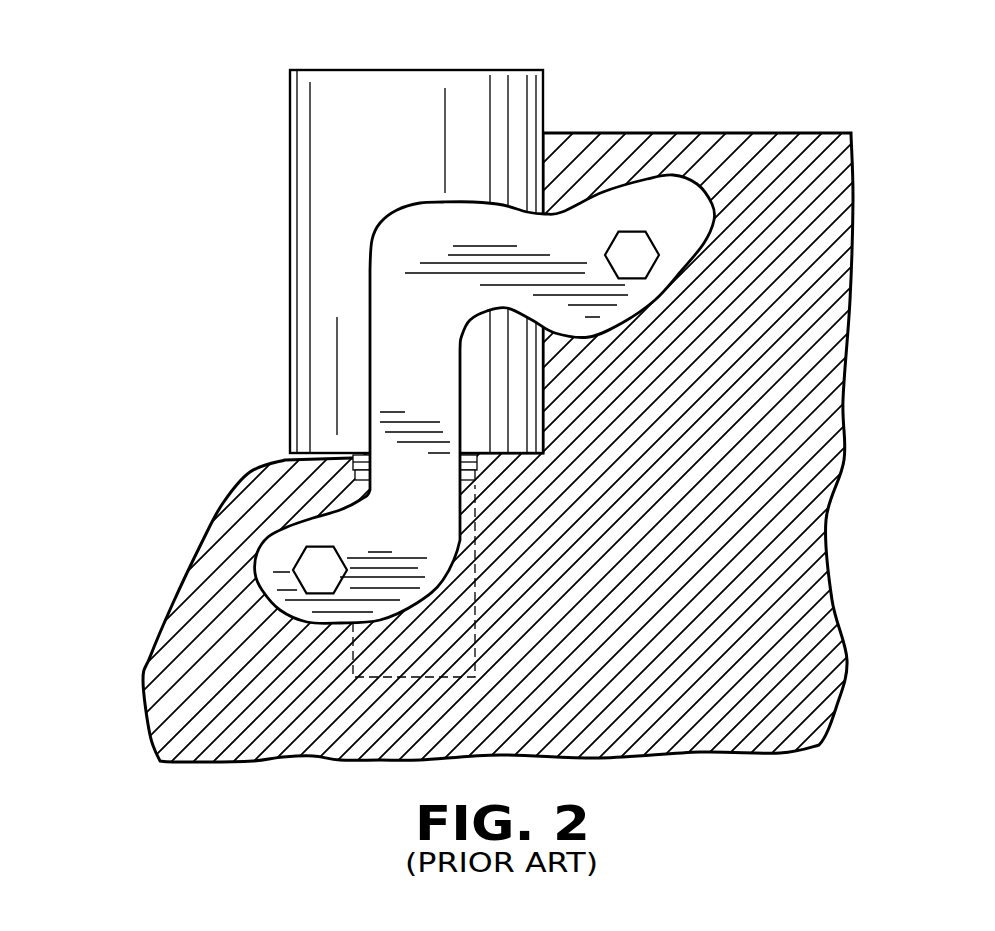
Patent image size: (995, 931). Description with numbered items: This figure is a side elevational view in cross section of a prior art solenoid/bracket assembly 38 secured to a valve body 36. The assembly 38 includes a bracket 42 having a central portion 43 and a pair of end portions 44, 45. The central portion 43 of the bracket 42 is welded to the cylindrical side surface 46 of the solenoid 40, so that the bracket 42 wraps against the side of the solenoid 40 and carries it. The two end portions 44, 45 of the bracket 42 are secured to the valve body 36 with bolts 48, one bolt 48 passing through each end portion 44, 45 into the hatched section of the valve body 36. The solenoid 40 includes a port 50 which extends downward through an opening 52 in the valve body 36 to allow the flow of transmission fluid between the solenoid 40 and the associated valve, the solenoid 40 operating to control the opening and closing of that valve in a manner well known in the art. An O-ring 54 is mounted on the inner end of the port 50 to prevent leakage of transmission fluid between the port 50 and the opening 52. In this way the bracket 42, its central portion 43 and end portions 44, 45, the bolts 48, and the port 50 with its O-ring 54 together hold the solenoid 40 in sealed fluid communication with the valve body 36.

The valve body 36 is at (817, 458).
The solenoid/bracket assembly 38 is at (230, 217).
The solenoid 40 is at (374, 233).
The bracket 42 is at (370, 400).
The central portion 43 is at (444, 377).
The end portion 44 is at (277, 555).
The end portion 45 is at (676, 205).
The cylindrical side surface 46 is at (433, 122).
The bolts 48 is at (640, 262).
The port 50 is at (285, 461).
The opening 52 is at (478, 460).
The O-ring 54 is at (352, 473).